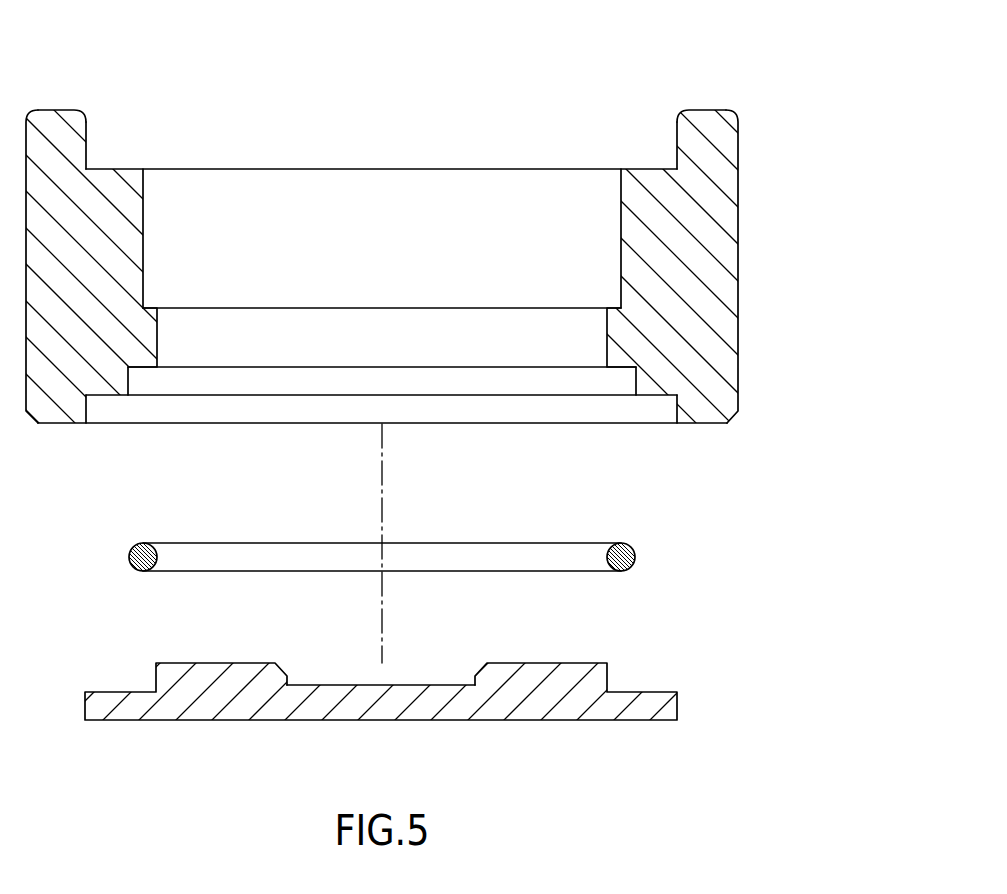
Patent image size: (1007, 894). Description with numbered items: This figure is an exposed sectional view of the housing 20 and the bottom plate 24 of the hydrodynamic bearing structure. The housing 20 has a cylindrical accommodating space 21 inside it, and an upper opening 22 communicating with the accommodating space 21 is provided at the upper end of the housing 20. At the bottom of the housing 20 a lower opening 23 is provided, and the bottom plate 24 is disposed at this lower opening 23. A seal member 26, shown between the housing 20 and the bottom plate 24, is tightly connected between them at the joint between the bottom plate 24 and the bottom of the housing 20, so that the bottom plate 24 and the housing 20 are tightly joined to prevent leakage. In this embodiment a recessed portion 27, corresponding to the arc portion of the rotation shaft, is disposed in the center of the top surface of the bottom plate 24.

The housing 20 is at (49, 110).
The accommodating space 21 is at (476, 206).
The upper opening 22 is at (637, 127).
The lower opening 23 is at (611, 413).
The bottom plate 24 is at (528, 705).
The seal member 26 is at (636, 558).
The recessed portion 27 is at (438, 685).